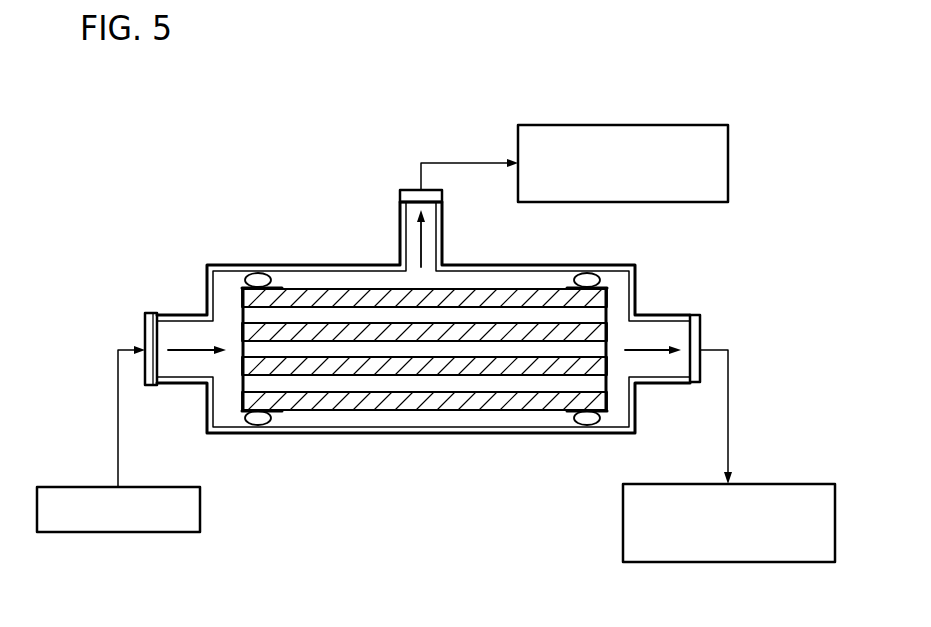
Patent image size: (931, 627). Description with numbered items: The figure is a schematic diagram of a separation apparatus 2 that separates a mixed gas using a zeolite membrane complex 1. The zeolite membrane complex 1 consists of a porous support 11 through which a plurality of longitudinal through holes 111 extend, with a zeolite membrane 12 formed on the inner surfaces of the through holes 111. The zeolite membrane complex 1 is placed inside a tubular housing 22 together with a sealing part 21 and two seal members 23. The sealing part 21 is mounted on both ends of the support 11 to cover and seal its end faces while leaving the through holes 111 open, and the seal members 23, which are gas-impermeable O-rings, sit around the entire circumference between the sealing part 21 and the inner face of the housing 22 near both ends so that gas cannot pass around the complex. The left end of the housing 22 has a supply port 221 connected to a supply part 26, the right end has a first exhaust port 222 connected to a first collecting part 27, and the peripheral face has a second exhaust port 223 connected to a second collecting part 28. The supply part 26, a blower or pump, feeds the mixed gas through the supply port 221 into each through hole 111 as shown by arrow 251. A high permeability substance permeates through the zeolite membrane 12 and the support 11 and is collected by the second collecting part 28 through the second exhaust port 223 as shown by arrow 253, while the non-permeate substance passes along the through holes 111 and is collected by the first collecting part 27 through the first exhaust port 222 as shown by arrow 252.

The zeolite membrane complex 1 is at (502, 512).
The separation apparatus 2 is at (170, 150).
The support 11 is at (543, 402).
The zeolite membrane 12 is at (476, 336).
The through hole 111 is at (381, 356).
The sealing part 21 is at (242, 301).
The housing 22 is at (227, 268).
The seal member 23 is at (263, 284).
The supply port 221 is at (169, 316).
The first exhaust port 222 is at (676, 314).
The second exhaust port 223 is at (398, 213).
The arrow 251 is at (178, 358).
The arrow 252 is at (660, 357).
The arrow 253 is at (420, 240).
The supply part 26 is at (200, 505).
The first collecting part 27 is at (623, 523).
The second collecting part 28 is at (728, 160).